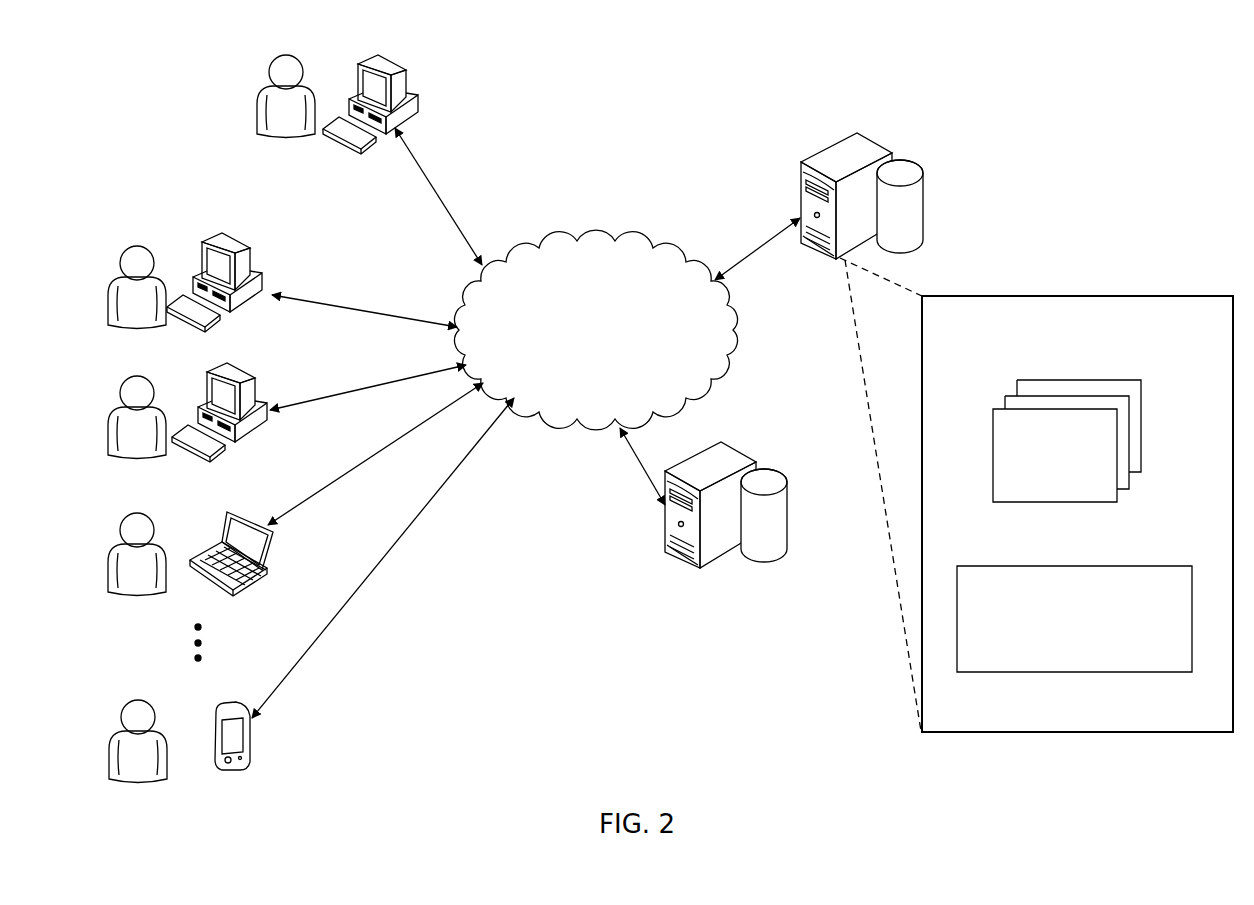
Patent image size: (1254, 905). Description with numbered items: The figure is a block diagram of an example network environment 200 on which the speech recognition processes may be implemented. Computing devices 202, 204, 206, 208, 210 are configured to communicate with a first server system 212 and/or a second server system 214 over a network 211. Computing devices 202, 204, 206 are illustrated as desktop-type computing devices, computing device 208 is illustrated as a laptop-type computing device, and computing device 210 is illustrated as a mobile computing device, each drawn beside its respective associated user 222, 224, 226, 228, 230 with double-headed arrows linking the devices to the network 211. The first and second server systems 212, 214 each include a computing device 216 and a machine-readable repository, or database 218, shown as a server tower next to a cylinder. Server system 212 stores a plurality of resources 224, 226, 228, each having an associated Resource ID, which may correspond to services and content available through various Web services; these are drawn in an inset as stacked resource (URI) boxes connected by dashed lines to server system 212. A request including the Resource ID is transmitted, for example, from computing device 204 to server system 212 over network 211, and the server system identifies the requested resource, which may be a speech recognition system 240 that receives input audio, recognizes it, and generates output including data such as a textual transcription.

The network environment 200 is at (700, 108).
The computing device 202 is at (376, 58).
The computing device 204 is at (224, 238).
The computing device 206 is at (226, 370).
The computing device 208 is at (229, 510).
The computing device 210 is at (214, 706).
The network 211 is at (608, 238).
The first server system 212 is at (808, 268).
The second server system 214 is at (672, 574).
The computing device 216 is at (876, 140).
The database 218 is at (923, 200).
The user 222 is at (265, 90).
The user / resource 224 is at (140, 244).
The user / resource 226 is at (141, 376).
The user / resource 228 is at (146, 514).
The user 230 is at (146, 704).
The speech recognition system 240 is at (1170, 566).